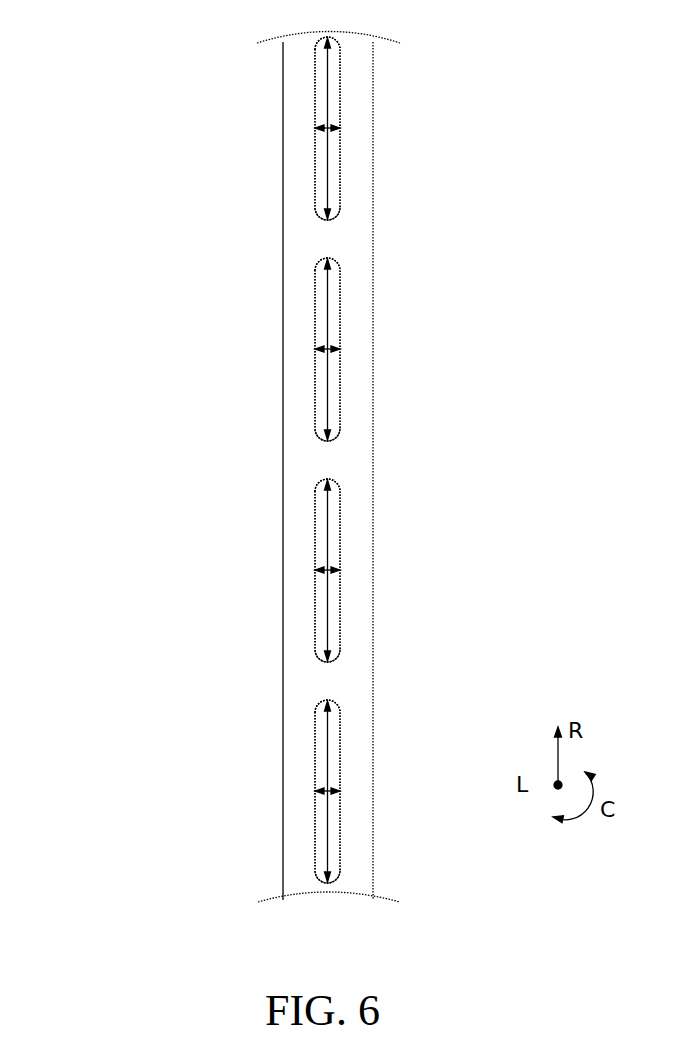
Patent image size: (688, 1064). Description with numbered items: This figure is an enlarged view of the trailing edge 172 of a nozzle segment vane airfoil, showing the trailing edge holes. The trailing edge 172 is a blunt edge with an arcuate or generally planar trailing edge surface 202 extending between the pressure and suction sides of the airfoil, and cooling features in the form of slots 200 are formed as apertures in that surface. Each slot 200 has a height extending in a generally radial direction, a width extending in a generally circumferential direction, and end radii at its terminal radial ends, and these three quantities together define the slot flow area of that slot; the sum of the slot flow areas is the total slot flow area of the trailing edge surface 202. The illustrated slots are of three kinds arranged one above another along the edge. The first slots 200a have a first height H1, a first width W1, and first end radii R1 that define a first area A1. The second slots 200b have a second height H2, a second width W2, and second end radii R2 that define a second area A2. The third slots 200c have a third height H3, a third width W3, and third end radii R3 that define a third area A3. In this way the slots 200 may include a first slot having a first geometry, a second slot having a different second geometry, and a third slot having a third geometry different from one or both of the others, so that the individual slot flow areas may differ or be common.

The trailing edge 172 is at (130, 66).
The slots 200 is at (112, 122).
The first slots 200a is at (175, 168).
The second slots 200b is at (206, 349).
The third slots 200c is at (206, 681).
The trailing edge surface 202 is at (360, 105).
The first height H1 is at (328, 73).
The first width W1 is at (318, 127).
The first end radii R1 is at (345, 50).
The first area A1 is at (296, 208).
The second height H2 is at (275, 349).
The second width W2 is at (279, 321).
The second end radii R2 is at (376, 349).
The second area A2 is at (272, 349).
The third height H3 is at (275, 681).
The third width W3 is at (279, 653).
The third end radii R3 is at (376, 681).
The third area A3 is at (272, 681).